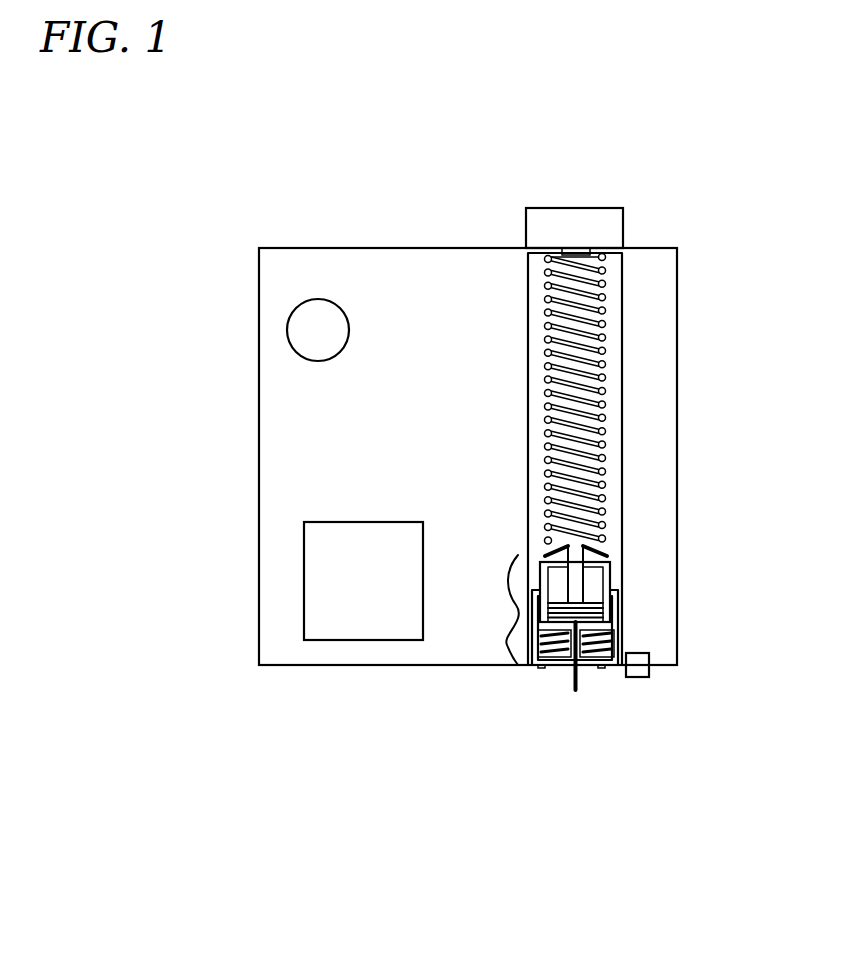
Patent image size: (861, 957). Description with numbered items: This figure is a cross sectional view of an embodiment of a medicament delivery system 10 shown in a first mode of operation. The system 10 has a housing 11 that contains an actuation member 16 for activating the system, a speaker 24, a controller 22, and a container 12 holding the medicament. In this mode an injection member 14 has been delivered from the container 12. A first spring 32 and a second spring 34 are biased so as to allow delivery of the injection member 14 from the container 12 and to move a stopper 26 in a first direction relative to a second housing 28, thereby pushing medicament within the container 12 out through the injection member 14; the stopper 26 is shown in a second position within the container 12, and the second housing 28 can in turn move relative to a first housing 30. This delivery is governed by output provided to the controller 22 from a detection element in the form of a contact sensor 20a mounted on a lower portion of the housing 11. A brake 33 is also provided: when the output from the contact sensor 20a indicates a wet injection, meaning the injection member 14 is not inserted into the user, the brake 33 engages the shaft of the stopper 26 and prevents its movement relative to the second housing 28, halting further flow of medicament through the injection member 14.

The medicament delivery system 10 is at (490, 153).
The housing 11 is at (432, 247).
The actuation member 16 is at (612, 217).
The speaker 24 is at (312, 330).
The controller 22 is at (332, 557).
The container 12 is at (515, 610).
The second spring 34 is at (603, 385).
The brake 33 is at (605, 527).
The second housing 28 is at (610, 570).
The stopper 26 is at (602, 605).
The first housing 30 is at (615, 643).
The first spring 32 is at (557, 648).
The injection member 14 is at (580, 682).
The contact sensor 20a is at (648, 670).